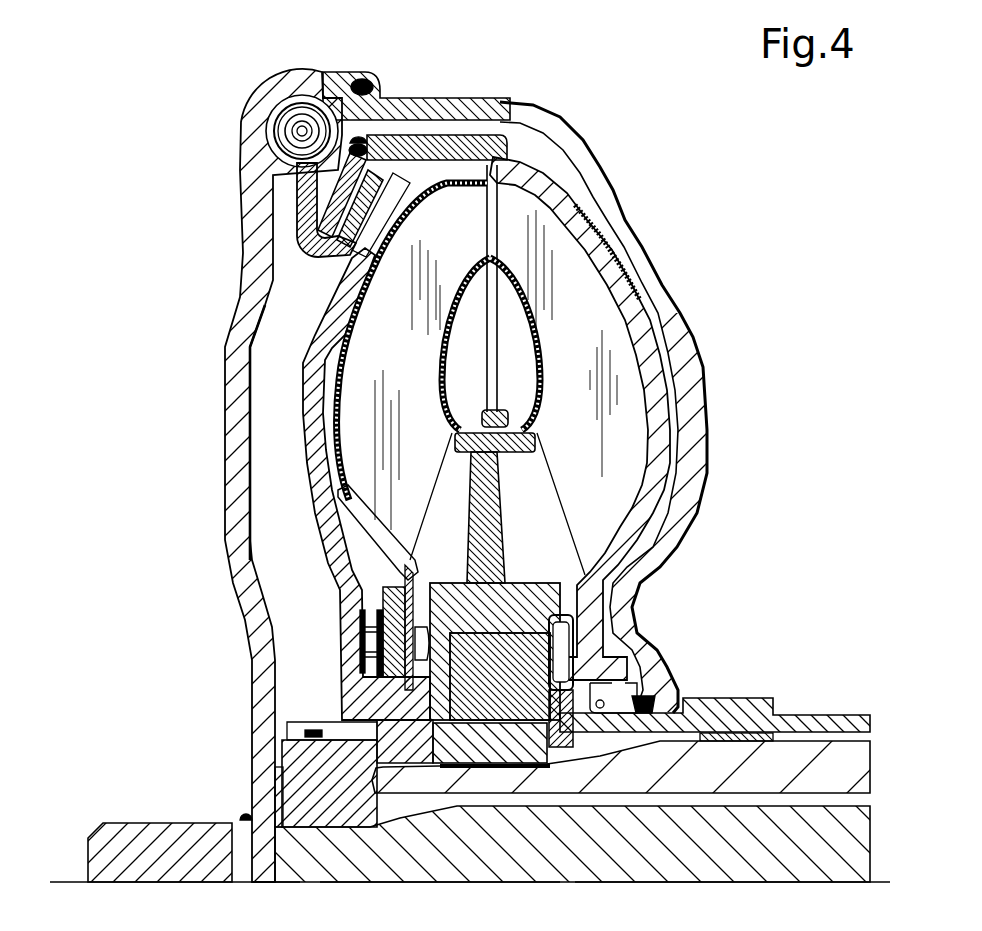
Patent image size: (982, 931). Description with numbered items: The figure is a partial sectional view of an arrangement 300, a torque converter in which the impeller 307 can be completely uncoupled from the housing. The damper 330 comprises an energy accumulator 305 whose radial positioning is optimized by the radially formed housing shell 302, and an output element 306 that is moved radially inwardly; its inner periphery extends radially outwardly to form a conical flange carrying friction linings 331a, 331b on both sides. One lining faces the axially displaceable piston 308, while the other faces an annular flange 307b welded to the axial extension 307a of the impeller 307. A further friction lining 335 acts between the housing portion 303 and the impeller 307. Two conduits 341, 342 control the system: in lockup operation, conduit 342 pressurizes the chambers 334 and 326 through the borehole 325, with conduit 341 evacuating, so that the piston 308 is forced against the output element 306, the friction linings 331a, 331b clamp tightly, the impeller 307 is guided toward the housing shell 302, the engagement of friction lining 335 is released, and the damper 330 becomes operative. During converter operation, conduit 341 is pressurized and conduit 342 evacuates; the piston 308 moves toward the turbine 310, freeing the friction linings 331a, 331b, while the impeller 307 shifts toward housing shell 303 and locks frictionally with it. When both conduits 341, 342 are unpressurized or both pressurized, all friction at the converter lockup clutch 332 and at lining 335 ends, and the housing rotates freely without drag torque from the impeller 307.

The arrangement 300 is at (632, 384).
The housing shell 302 is at (263, 235).
The housing portion 303 is at (565, 160).
The energy accumulator 305 is at (273, 147).
The output element 306 is at (303, 208).
The impeller 307 is at (630, 300).
The axial extension 307a is at (485, 183).
The annular flange 307b is at (330, 200).
The piston 308 is at (437, 213).
The turbine 310 is at (492, 165).
The borehole 325 is at (653, 707).
The pressurized chamber 326 is at (690, 370).
The damper 330 is at (283, 168).
The friction lining 331a is at (370, 170).
The friction lining 331b is at (408, 135).
The converter lockup clutch 332 is at (305, 262).
The pressurized chamber 334 is at (337, 350).
The friction lining 335 is at (605, 230).
The conduit 341 is at (858, 795).
The conduit 342 is at (866, 732).